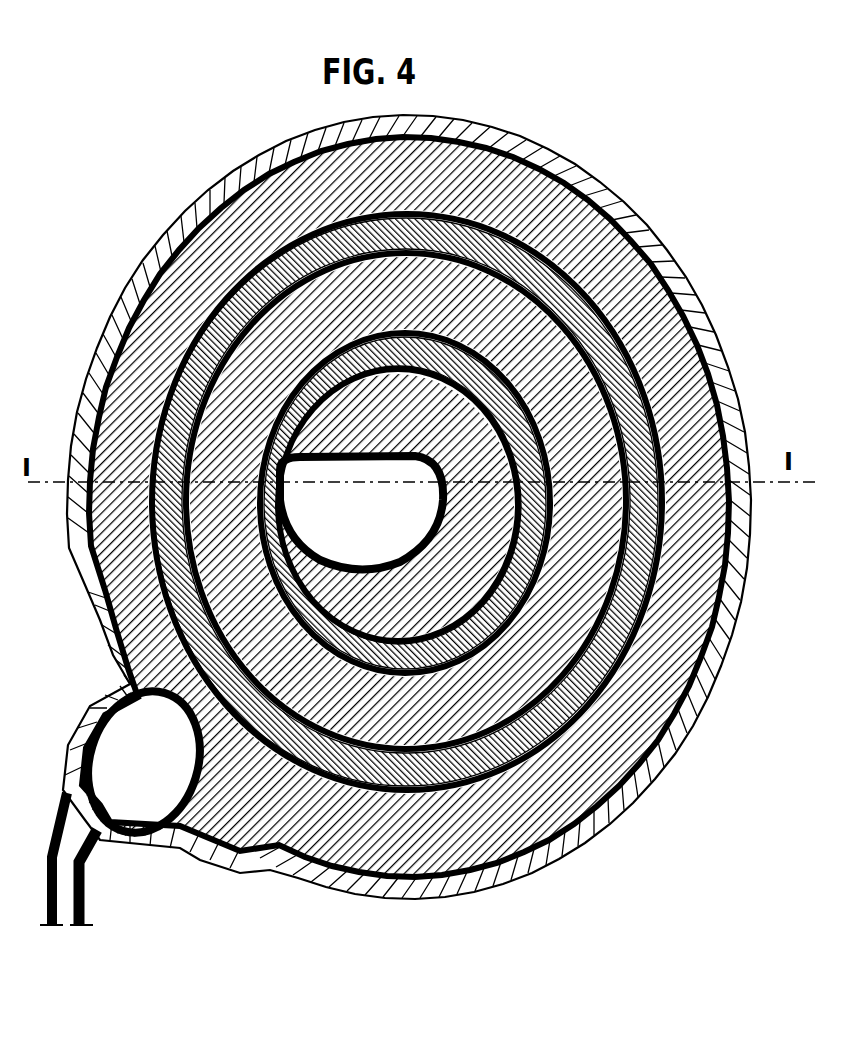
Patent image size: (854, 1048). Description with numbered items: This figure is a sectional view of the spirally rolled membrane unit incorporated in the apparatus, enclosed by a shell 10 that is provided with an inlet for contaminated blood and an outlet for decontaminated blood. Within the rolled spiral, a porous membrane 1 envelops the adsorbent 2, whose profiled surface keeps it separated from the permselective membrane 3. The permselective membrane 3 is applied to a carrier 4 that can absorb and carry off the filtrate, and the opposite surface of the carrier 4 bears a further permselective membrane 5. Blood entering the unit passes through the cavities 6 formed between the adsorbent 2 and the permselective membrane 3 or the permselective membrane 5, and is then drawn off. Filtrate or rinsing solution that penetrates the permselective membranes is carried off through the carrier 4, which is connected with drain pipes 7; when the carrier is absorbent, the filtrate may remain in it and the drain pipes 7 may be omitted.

The porous membrane 1 is at (172, 378).
The adsorbent 2 is at (232, 285).
The permselective membrane 3 is at (452, 222).
The carrier 4 is at (618, 270).
The permselective membrane 5 is at (752, 503).
The cavities 6 is at (557, 745).
The drain pipes 7 is at (80, 762).
The shell 10 is at (328, 142).